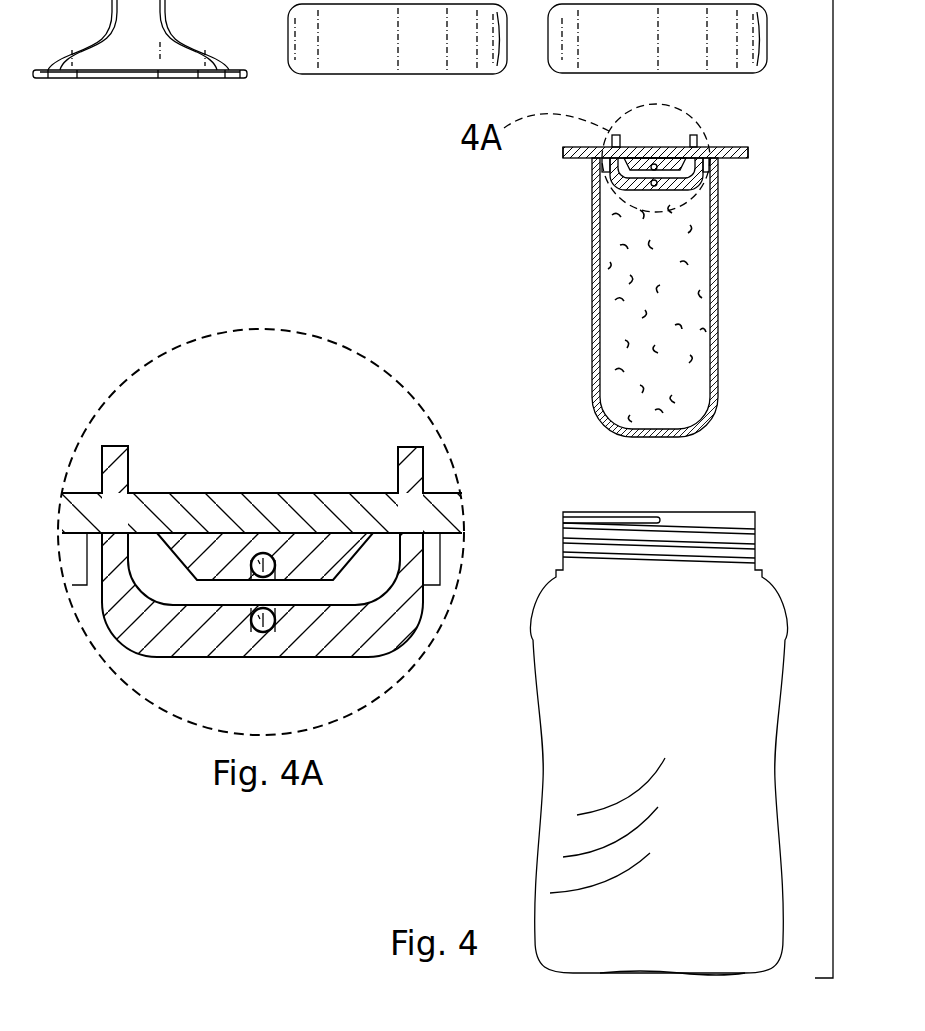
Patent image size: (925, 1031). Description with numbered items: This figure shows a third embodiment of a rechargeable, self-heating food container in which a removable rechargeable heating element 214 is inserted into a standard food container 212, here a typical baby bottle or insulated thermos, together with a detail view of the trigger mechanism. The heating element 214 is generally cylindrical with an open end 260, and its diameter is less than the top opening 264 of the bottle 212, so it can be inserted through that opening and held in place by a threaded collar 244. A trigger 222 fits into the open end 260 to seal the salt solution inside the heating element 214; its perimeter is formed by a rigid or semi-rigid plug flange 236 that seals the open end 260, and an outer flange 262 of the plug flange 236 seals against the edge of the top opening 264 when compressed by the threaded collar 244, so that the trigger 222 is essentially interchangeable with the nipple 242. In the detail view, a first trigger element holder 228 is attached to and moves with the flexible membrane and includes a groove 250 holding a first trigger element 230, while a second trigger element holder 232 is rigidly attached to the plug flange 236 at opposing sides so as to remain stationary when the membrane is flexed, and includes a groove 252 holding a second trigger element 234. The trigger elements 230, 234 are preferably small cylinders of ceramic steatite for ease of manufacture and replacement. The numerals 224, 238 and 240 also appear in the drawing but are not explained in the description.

In FIG. 4, the food container 212 is at (777, 787).
In FIG. 4, the heating element 214 is at (723, 271).
In FIG. 4, the trigger 222 is at (662, 146).
In FIG. 4A, the trigger 222 is at (290, 420).
In FIG. 4, the desiccant 224 is at (700, 205).
In FIG. 4A, the first trigger element holder 228 is at (203, 565).
In FIG. 4A, the first trigger element 230 is at (243, 531).
In FIG. 4A, the second trigger element holder 232 is at (100, 590).
In FIG. 4A, the second trigger element 234 is at (250, 628).
In FIG. 4, the plug flange 236 is at (753, 146).
In FIG. 4A, the plug flange 236 is at (410, 447).
In FIG. 4, the plate 238 is at (757, 527).
In FIG. 4A, the plate 238 is at (168, 491).
In FIG. 4, the disc seal 240 is at (358, 76).
In FIG. 4, the nipple 242 is at (140, 78).
In FIG. 4, the threaded collar 244 is at (767, 57).
In FIG. 4A, the groove 250 is at (276, 557).
In FIG. 4A, the groove 252 is at (274, 628).
In FIG. 4, the open end 260 is at (600, 160).
In FIG. 4, the outer flange 262 is at (750, 150).
In FIG. 4, the top opening 264 is at (622, 512).